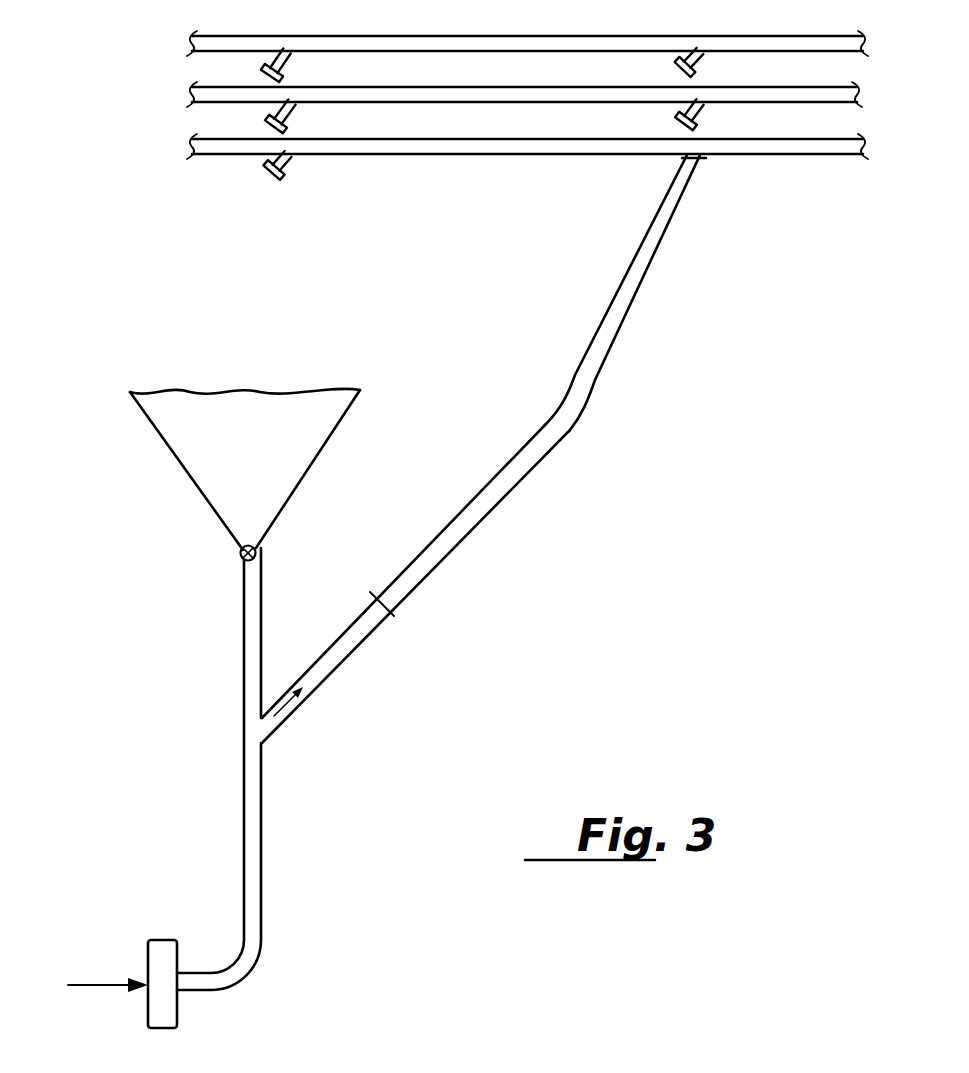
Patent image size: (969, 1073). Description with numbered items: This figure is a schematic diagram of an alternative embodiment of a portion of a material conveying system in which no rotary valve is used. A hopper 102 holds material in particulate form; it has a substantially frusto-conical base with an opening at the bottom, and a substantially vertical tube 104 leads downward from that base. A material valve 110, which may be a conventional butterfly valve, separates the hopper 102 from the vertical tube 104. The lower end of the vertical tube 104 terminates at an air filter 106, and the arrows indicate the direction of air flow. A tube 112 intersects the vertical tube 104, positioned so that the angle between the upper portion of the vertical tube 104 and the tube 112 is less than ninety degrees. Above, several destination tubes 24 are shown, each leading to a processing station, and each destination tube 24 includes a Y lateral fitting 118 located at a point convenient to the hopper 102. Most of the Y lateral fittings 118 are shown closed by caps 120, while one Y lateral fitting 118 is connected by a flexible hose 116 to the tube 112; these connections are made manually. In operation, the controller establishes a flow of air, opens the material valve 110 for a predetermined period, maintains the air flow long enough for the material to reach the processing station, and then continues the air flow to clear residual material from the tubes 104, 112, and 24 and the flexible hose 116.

The destination tube 24 is at (865, 45).
The hopper 102 is at (191, 478).
The vertical tube 104 is at (263, 820).
The air filter 106 is at (163, 1010).
The material valve 110 is at (258, 565).
The tube 112 is at (351, 652).
The flexible hose 116 is at (587, 376).
The Y lateral fitting 118 is at (293, 106).
The cap 120 is at (267, 118).